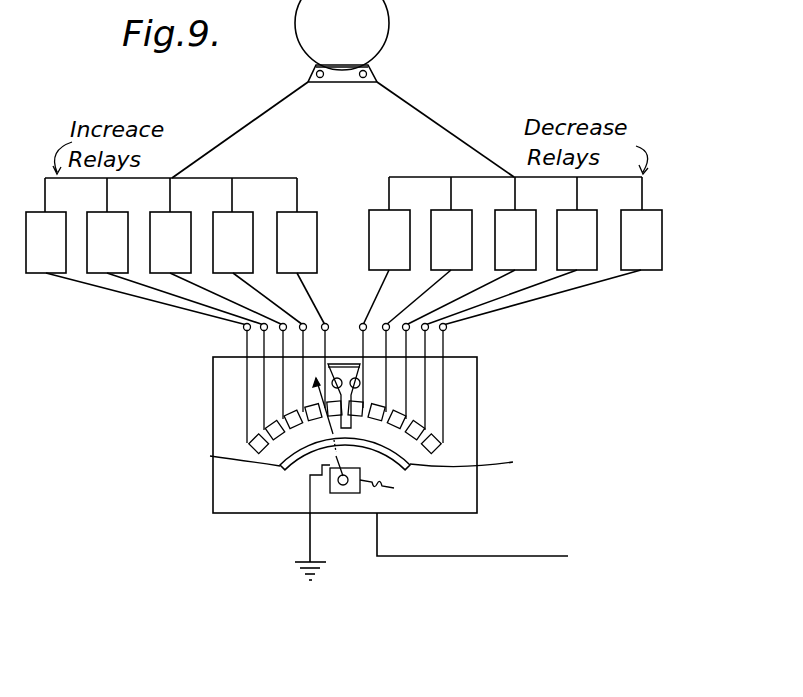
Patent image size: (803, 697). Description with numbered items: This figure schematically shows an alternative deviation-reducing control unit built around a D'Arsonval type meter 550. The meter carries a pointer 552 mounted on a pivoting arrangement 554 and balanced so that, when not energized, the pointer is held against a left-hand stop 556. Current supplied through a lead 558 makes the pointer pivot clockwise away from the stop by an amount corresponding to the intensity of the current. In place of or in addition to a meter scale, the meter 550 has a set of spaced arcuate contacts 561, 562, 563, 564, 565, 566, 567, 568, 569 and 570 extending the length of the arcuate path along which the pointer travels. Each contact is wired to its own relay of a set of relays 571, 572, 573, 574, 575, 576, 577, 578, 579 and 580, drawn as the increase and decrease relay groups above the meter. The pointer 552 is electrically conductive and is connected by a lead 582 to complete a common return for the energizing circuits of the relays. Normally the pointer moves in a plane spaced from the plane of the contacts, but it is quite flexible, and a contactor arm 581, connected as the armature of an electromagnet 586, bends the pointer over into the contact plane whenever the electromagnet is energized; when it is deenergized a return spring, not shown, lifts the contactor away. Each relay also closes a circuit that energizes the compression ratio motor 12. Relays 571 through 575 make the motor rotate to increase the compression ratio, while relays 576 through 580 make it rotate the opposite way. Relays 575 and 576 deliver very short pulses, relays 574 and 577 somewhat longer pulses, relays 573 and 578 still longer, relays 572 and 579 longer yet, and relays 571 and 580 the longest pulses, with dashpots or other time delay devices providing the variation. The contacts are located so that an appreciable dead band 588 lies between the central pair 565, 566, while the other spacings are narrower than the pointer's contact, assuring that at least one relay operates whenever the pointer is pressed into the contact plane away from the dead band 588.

The compression ratio motor 12 is at (380, 25).
The D'Arsonval type meter 550 is at (213, 391).
The pointer 552 is at (319, 475).
The pivoting arrangement 554 is at (394, 490).
The left-hand stop 556 is at (226, 456).
The lead 558 is at (479, 556).
The arcuate contact 561 is at (252, 440).
The arcuate contact 562 is at (271, 424).
The arcuate contact 563 is at (290, 414).
The arcuate contact 564 is at (310, 406).
The arcuate contact 565 is at (328, 400).
The arcuate contact 566 is at (360, 400).
The arcuate contact 567 is at (381, 405).
The arcuate contact 568 is at (400, 414).
The arcuate contact 569 is at (418, 425).
The arcuate contact 570 is at (440, 441).
The relay 571 is at (136, 268).
The relay 572 is at (175, 268).
The relay 573 is at (216, 268).
The relay 574 is at (258, 268).
The relay 575 is at (301, 268).
The relay 576 is at (386, 267).
The relay 577 is at (429, 267).
The relay 578 is at (471, 267).
The relay 579 is at (511, 267).
The relay 580 is at (552, 267).
The contactor arm 581 is at (303, 459).
The lead 582 is at (307, 541).
The electromagnet 586 is at (352, 360).
The dead band 588 is at (479, 463).